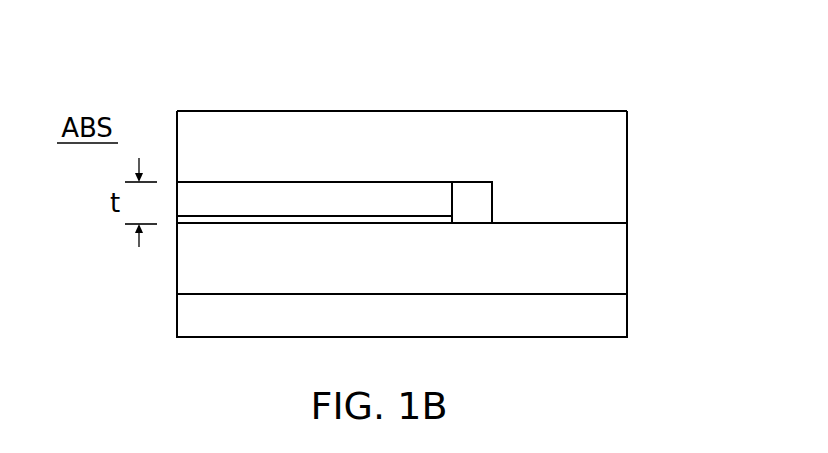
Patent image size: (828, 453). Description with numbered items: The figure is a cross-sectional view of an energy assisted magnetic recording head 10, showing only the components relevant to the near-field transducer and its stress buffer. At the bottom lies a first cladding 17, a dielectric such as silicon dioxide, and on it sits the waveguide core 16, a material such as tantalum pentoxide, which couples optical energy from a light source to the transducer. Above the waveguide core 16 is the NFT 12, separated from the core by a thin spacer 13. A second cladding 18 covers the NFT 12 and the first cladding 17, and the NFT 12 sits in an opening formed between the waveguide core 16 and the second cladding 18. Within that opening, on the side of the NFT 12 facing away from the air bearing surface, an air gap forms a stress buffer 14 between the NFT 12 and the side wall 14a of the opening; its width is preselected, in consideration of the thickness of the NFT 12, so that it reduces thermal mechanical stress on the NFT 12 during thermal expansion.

The EAMR head 10 is at (541, 84).
The NFT 12 is at (272, 195).
The spacer 13 is at (243, 222).
The stress buffer 14 is at (467, 215).
The side wall 14a is at (493, 200).
The waveguide core 16 is at (612, 260).
The first cladding 17 is at (615, 317).
The second cladding 18 is at (402, 122).